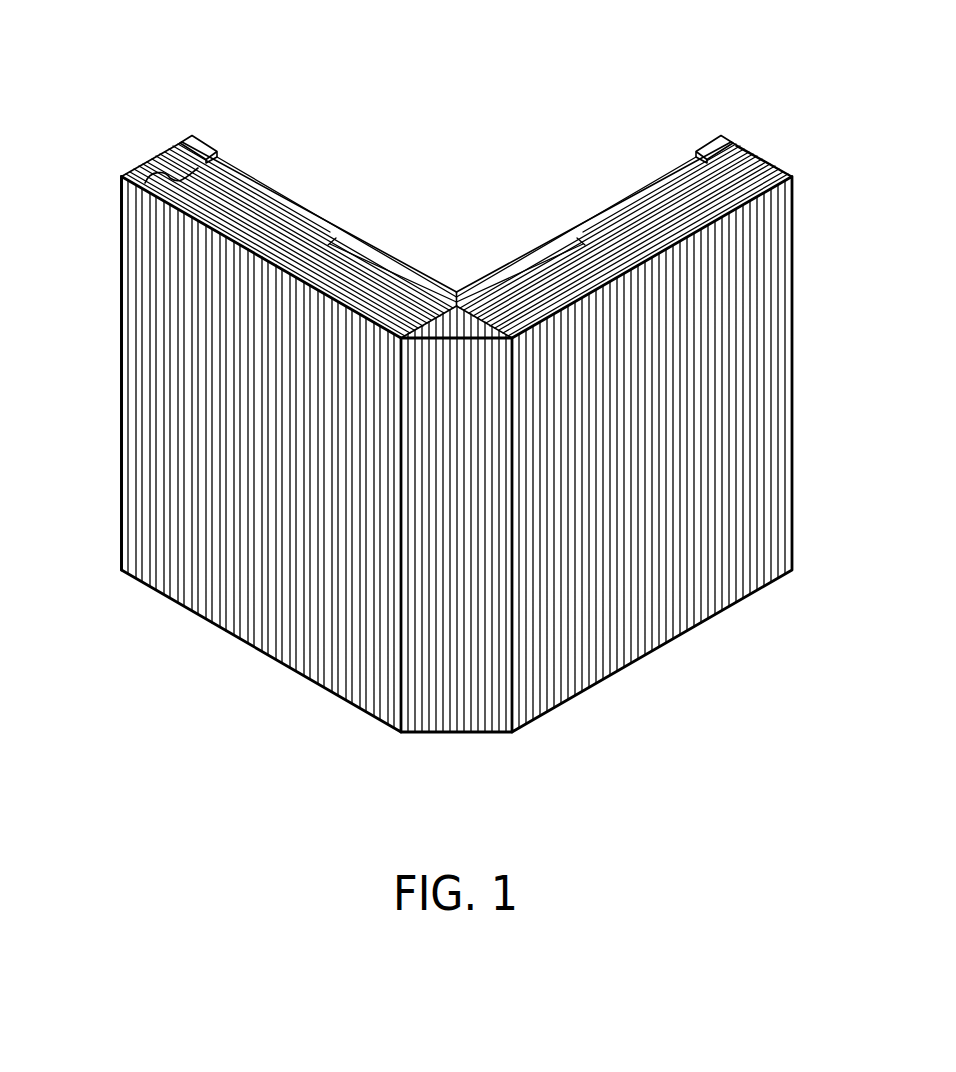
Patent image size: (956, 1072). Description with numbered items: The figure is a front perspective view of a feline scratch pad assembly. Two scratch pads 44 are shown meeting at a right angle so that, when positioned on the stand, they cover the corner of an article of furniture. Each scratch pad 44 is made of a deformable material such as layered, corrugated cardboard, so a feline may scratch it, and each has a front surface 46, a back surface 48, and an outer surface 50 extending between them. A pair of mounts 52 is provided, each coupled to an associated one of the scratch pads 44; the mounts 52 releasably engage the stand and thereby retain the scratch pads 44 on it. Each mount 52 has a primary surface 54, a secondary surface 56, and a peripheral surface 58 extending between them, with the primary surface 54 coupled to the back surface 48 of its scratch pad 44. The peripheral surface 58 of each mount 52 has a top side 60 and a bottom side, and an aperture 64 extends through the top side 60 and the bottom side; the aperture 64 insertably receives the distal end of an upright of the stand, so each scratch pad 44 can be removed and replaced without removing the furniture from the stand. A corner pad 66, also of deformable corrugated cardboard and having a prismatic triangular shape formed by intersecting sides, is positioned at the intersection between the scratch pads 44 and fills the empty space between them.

The scratch pad 44 is at (313, 655).
The front surface 46 is at (233, 565).
The back surface 48 is at (352, 250).
The outer surface 50 is at (168, 178).
The mount 52 is at (512, 262).
The primary surface 54 is at (231, 188).
The secondary surface 56 is at (196, 136).
The peripheral surface 58 is at (546, 244).
The top side 60 is at (725, 135).
The aperture 64 is at (649, 192).
The corner pad 66 is at (460, 700).